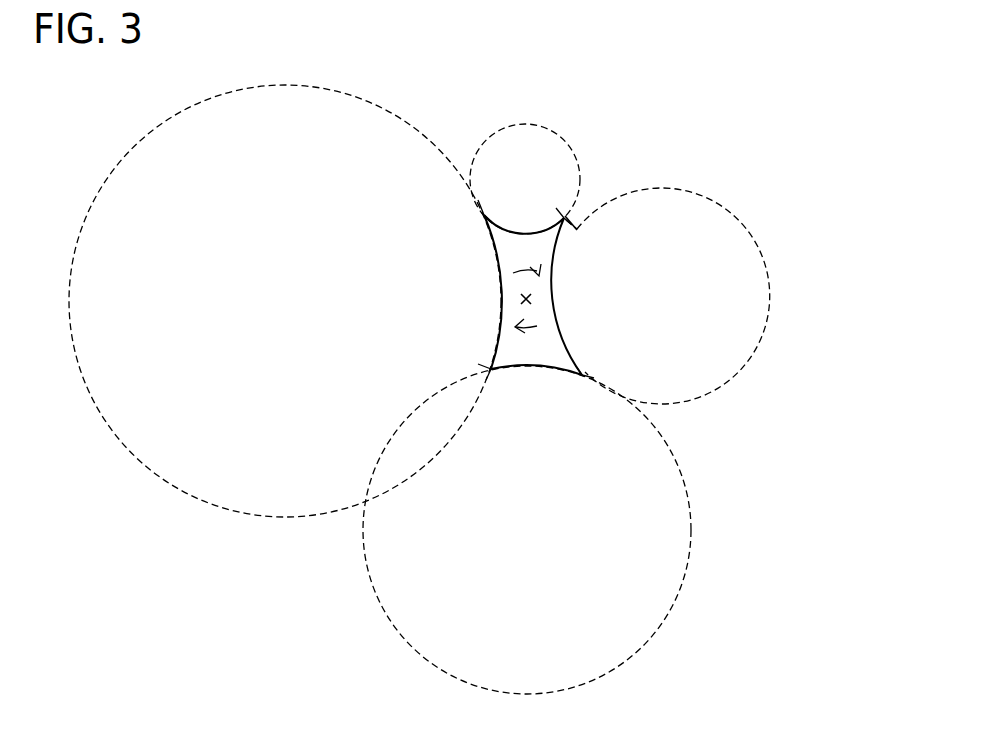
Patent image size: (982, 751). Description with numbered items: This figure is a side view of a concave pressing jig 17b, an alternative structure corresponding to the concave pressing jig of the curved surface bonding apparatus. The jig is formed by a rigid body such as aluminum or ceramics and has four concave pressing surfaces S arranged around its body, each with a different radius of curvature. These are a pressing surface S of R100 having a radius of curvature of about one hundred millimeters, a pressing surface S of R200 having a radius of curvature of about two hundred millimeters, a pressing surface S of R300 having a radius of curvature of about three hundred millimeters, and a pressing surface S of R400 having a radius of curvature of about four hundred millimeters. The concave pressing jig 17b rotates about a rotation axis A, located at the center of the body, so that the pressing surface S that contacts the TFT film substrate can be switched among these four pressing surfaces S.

The concave pressing jig 17b is at (571, 219).
The pressing surface of R100 is at (525, 233).
The pressing surface of R200 is at (660, 299).
The pressing surface of R300 is at (527, 366).
The pressing surface of R400 is at (501, 301).
The pressing surface S is at (505, 230).
The rotation axis A is at (532, 300).